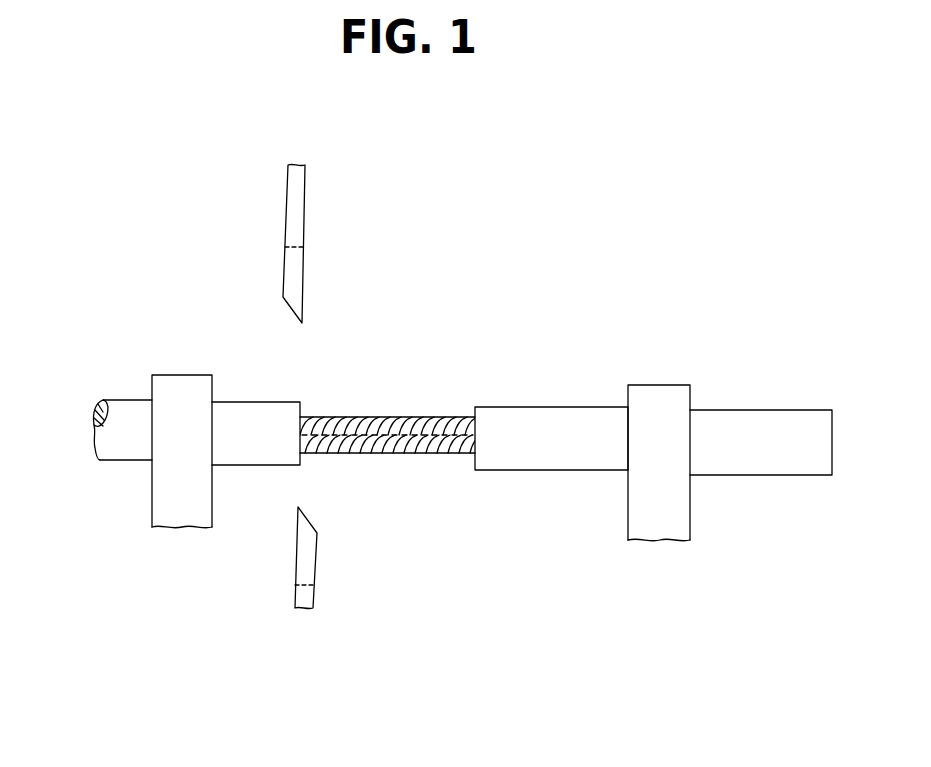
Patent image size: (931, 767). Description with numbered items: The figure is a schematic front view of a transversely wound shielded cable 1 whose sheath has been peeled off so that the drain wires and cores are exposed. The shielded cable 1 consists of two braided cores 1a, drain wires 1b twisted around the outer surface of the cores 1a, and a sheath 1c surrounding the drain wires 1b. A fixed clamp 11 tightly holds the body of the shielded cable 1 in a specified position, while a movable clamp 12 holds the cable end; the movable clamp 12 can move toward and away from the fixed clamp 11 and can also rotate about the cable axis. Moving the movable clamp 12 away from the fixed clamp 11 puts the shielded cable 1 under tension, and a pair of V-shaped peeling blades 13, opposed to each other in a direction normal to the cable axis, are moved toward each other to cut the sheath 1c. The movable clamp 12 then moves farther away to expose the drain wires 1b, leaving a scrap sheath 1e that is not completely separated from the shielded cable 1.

The shielded cable 1 is at (497, 268).
The cores 1a is at (415, 417).
The drain wires 1b is at (368, 417).
The sheath 1c is at (285, 407).
The scrap sheath 1e is at (552, 453).
The fixed clamp 11 is at (165, 493).
The movable clamp 12 is at (663, 530).
The peeling blades 13 is at (297, 218).